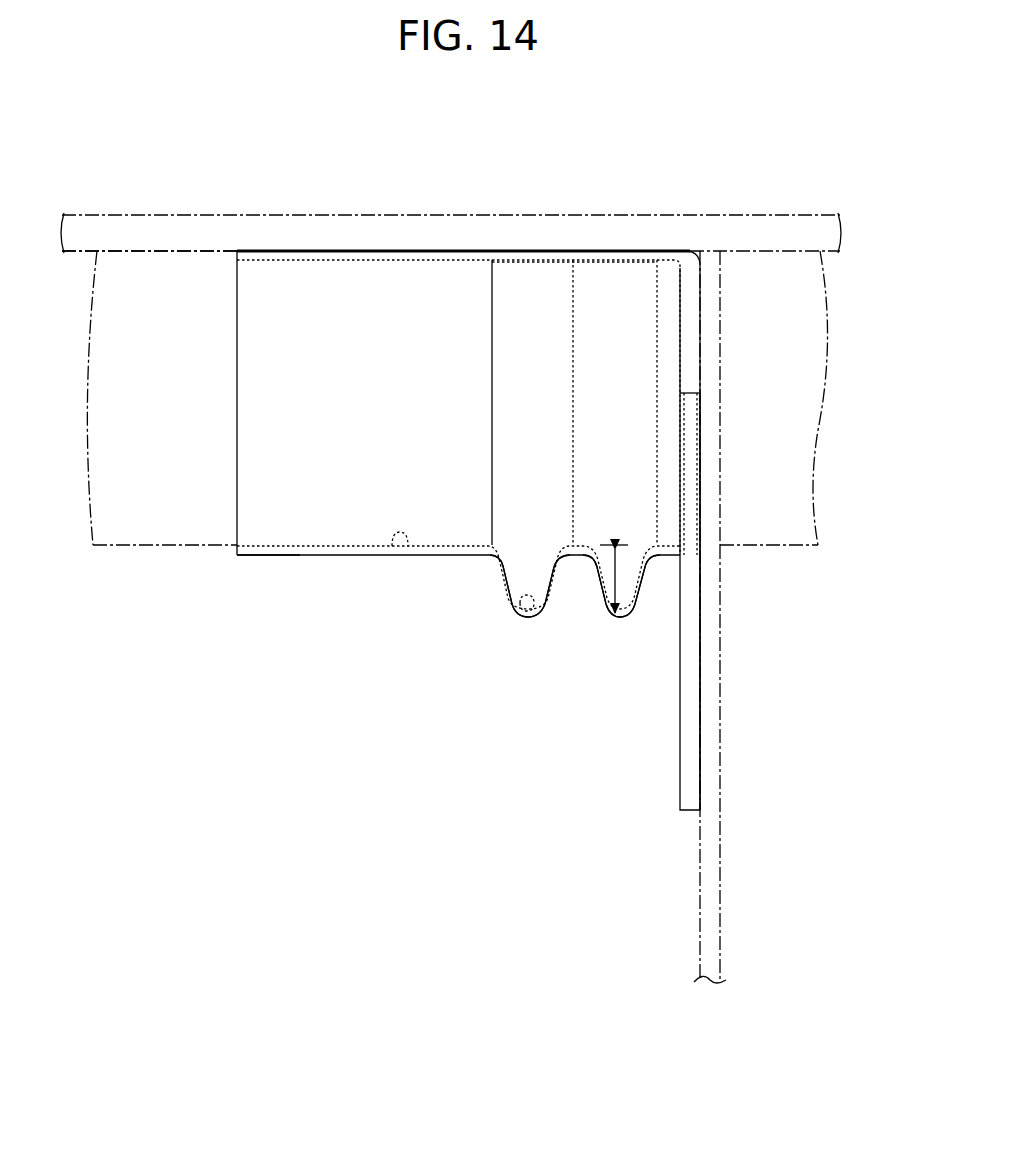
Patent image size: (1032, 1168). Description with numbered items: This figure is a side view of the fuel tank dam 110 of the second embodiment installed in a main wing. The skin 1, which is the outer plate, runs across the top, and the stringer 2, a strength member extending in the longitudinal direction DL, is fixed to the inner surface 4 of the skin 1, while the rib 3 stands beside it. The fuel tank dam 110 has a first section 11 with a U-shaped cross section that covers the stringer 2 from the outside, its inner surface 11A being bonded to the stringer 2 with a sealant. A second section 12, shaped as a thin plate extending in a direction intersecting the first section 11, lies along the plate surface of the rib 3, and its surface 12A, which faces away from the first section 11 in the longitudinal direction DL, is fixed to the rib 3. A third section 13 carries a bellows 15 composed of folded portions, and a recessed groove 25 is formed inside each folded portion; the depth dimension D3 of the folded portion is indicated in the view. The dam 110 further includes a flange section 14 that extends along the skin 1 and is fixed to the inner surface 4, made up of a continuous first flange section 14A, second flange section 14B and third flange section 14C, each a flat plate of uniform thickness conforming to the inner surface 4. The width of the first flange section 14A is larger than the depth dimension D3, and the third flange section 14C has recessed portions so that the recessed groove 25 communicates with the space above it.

The skin 1 is at (285, 230).
The stringer 2 is at (800, 387).
The rib 3 is at (712, 766).
The inner surface 4 is at (150, 256).
The first section 11 is at (350, 520).
The inner surface 11A is at (401, 550).
The fuel tank dam 110 is at (264, 568).
The second section 12 is at (680, 742).
The surface 12A is at (700, 623).
The third section 13 is at (530, 534).
The flange section 14 is at (443, 343).
The first flange section 14A is at (370, 256).
The second flange section 14B is at (663, 258).
The third flange section 14C is at (535, 256).
The bellows 15 is at (592, 585).
The recessed groove 25 is at (527, 611).
The depth dimension D3 is at (615, 597).
The longitudinal direction DL is at (330, 848).